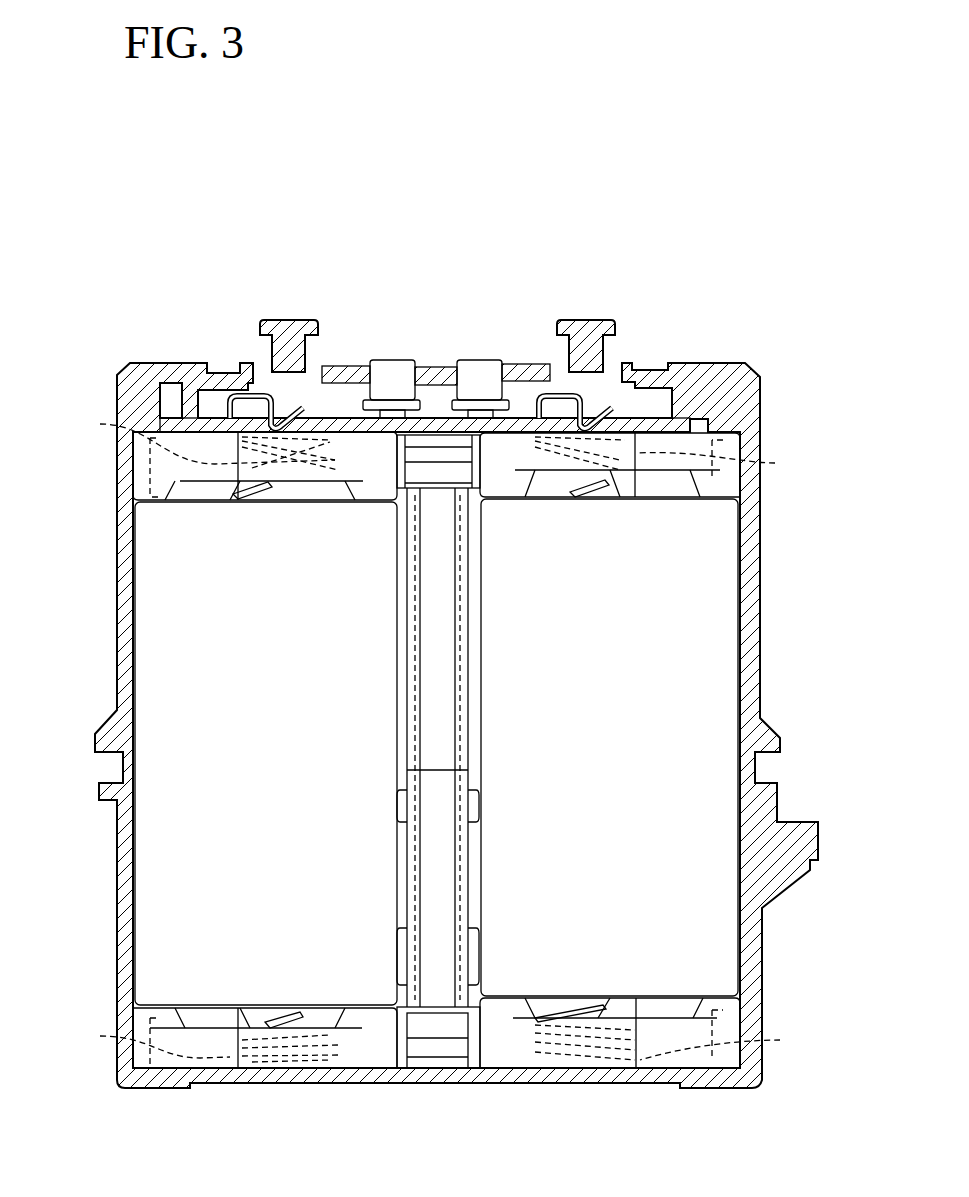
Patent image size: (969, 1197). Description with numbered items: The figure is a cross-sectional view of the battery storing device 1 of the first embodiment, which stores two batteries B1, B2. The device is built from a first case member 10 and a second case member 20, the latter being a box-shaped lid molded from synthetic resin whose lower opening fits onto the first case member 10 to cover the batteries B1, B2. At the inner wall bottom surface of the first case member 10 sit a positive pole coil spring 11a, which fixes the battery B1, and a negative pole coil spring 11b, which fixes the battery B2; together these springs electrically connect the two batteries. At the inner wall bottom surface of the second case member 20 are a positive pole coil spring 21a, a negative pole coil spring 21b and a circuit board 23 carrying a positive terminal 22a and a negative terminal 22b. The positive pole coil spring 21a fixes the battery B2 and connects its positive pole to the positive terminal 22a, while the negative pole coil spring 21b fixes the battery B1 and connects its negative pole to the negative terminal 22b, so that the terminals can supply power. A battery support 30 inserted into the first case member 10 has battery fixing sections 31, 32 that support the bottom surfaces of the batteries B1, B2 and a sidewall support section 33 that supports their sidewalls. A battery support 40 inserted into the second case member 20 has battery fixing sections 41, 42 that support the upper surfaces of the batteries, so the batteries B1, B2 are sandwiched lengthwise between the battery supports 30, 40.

The battery storing device 1 is at (753, 190).
The first case member 10 is at (765, 870).
The positive pole coil spring 11a is at (140, 1038).
The negative pole coil spring 11b is at (739, 1039).
The second case member 20 is at (745, 406).
The positive pole coil spring 21a is at (738, 465).
The negative pole coil spring 21b is at (189, 435).
The positive terminal 22a is at (487, 360).
The negative terminal 22b is at (392, 360).
The circuit board 23 is at (650, 425).
The battery support 30 is at (263, 751).
The battery fixing section 31 is at (377, 1028).
The battery fixing section 32 is at (502, 1028).
The sidewall support section 33 is at (405, 775).
The battery support 40 is at (427, 382).
The battery fixing section 41 is at (352, 445).
The battery fixing section 42 is at (520, 445).
The battery B1 is at (205, 613).
The battery B2 is at (668, 636).